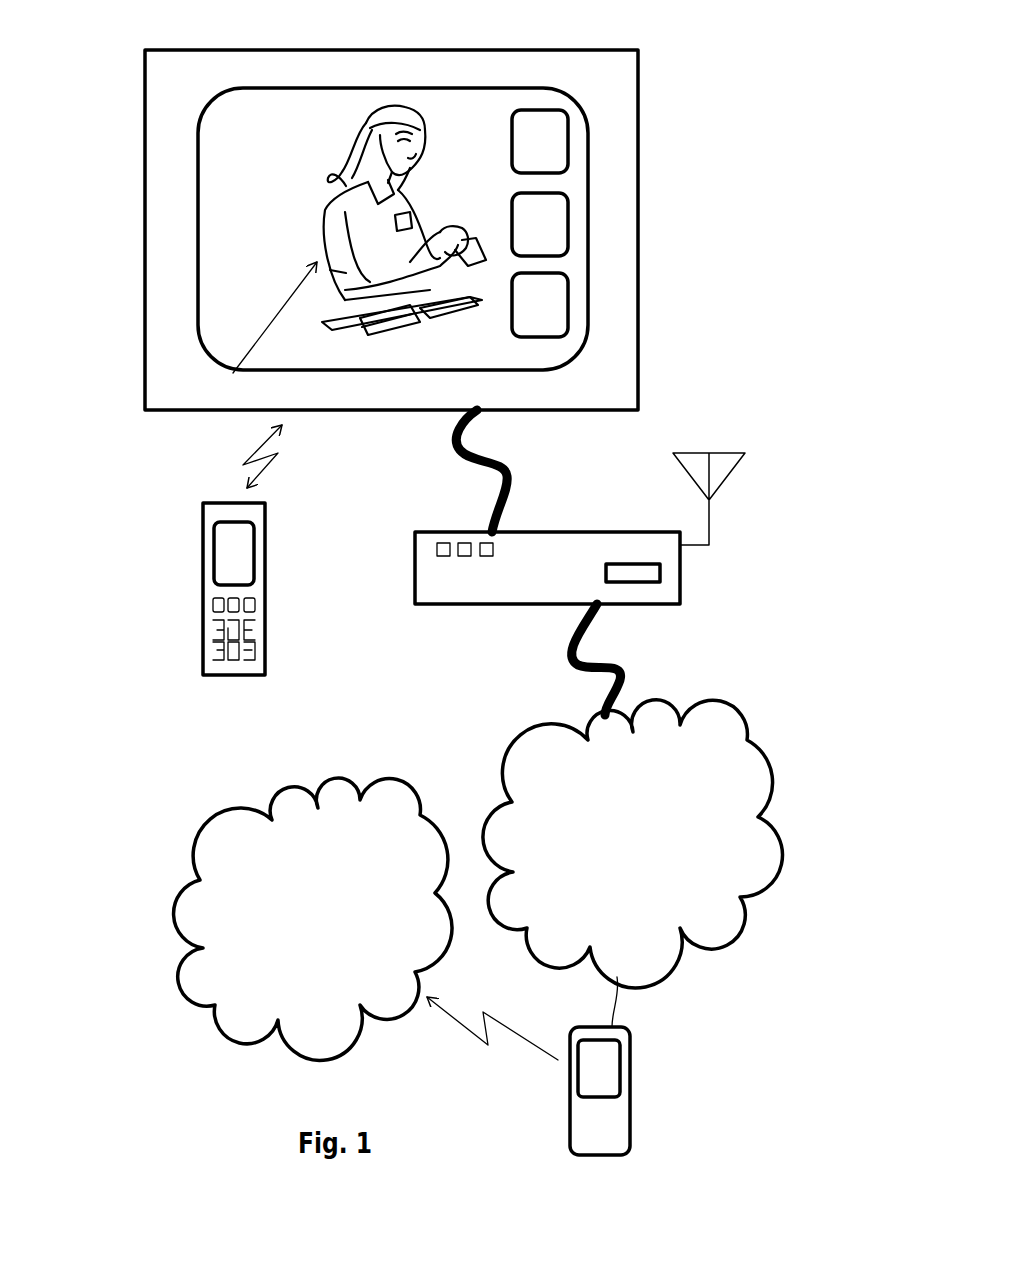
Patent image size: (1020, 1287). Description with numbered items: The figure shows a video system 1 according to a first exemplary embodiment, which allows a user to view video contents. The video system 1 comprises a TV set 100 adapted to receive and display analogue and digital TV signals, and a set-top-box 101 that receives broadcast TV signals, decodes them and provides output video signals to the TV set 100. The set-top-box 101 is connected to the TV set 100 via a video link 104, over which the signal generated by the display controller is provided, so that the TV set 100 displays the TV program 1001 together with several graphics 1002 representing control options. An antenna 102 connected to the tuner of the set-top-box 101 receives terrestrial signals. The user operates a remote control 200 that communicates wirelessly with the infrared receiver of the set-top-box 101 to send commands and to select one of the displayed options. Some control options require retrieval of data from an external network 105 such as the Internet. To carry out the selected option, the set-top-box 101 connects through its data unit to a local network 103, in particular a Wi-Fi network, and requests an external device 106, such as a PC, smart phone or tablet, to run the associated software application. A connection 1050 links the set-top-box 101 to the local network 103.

The video system 1 is at (710, 93).
The TV set 100 is at (217, 75).
The TV program 1001 is at (238, 370).
The graphics 1002 is at (563, 322).
The remote control 200 is at (197, 589).
The video link 104 is at (490, 484).
The set-top-box 101 is at (527, 545).
The antenna 102 is at (707, 516).
The network connection 1050 is at (618, 670).
The local network 103 is at (590, 927).
The external network 105 is at (213, 887).
The external device 106 is at (592, 1124).